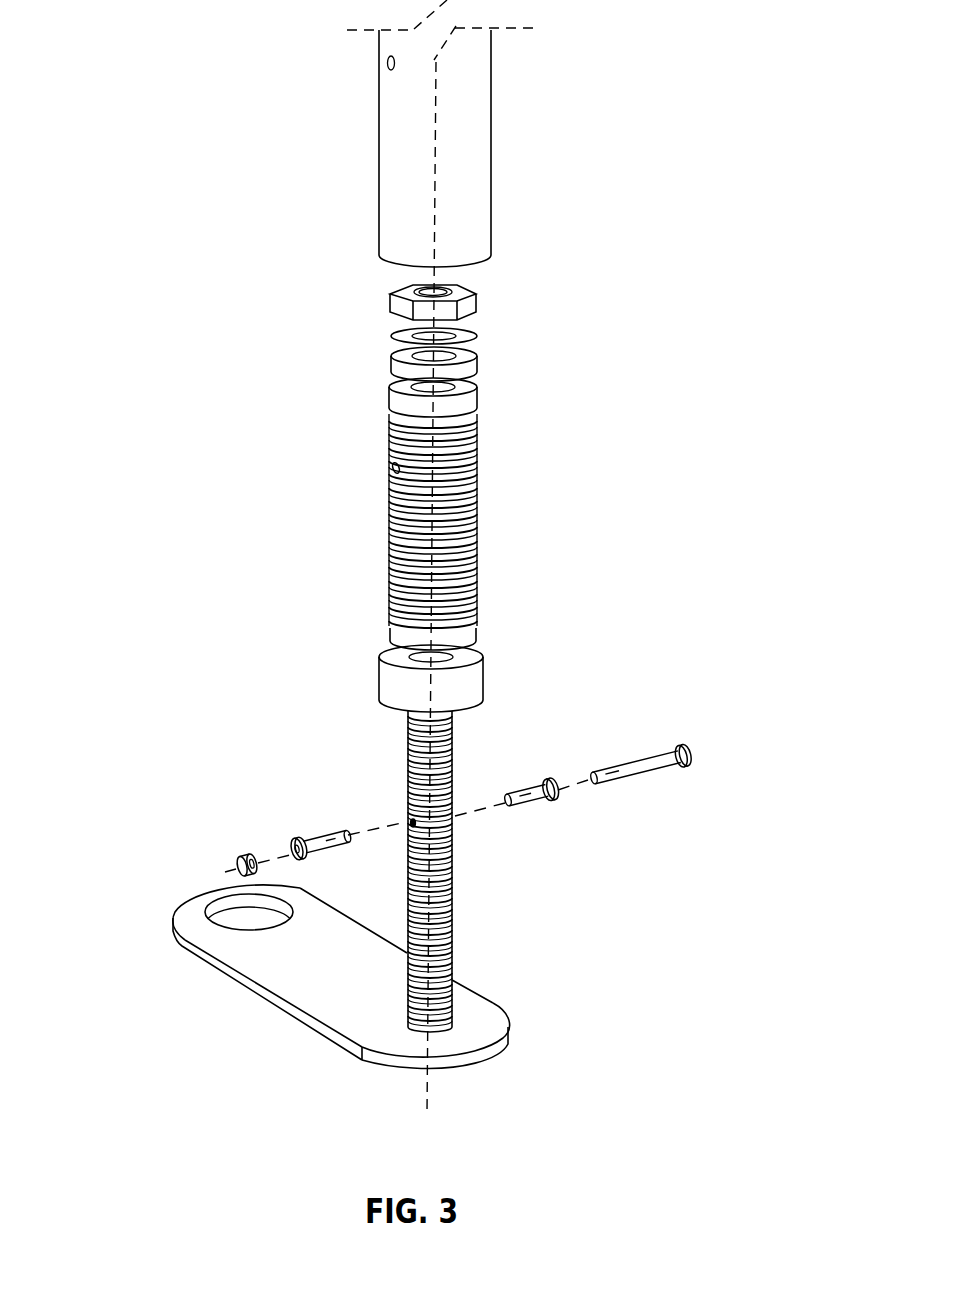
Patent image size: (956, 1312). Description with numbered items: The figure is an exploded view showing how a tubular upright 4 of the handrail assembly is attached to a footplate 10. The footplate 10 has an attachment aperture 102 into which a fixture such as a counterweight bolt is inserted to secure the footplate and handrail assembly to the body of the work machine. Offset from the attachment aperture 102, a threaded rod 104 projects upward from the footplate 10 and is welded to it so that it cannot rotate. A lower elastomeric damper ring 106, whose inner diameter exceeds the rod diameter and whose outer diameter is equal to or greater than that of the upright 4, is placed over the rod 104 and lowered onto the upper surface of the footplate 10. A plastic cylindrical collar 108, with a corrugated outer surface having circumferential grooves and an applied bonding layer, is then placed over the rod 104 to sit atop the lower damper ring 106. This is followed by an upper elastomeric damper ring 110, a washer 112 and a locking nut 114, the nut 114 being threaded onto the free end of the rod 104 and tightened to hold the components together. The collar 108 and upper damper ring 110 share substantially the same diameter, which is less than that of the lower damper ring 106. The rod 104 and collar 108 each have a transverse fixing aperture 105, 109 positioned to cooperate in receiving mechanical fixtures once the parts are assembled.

The upright 4 is at (467, 213).
The footplate 10 is at (477, 1019).
The attachment aperture 102 is at (207, 916).
The threaded rod 104 is at (450, 903).
The fixing aperture 105 is at (412, 823).
The lower elastomeric damper ring 106 is at (458, 687).
The plastic cylindrical collar 108 is at (477, 575).
The fixing aperture 109 is at (393, 475).
The upper elastomeric damper ring 110 is at (470, 365).
The washer 112 is at (470, 338).
The locking nut 114 is at (467, 302).